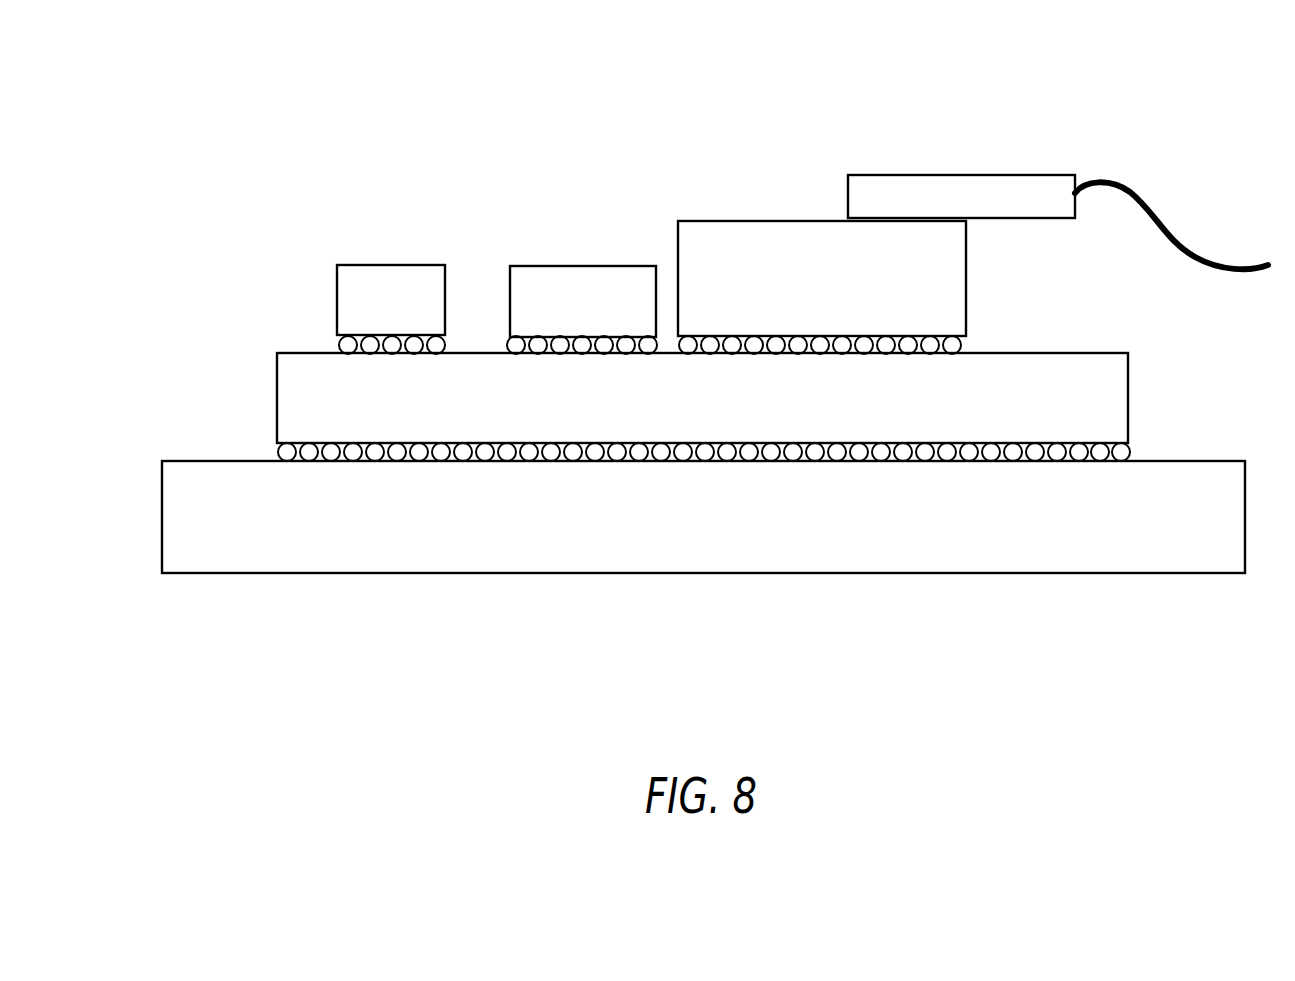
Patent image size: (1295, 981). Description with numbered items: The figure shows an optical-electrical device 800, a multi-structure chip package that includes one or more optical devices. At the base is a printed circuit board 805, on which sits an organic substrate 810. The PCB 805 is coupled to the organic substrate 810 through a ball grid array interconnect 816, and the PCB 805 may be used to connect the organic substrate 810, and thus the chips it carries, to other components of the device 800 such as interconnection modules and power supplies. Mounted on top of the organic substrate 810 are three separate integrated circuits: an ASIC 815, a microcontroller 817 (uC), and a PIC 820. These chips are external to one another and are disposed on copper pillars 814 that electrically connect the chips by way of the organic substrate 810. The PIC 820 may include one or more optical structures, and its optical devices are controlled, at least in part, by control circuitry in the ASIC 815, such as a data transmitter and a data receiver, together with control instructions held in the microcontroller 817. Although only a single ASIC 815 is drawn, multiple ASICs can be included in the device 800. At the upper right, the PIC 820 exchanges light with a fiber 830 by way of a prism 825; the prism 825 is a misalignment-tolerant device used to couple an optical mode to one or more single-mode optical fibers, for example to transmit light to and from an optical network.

The optical-electrical device 800 is at (346, 97).
The printed circuit board 805 is at (682, 546).
The organic substrate 810 is at (682, 428).
The copper pillars 814 is at (326, 341).
The ASIC 815 is at (562, 331).
The ball grid array interconnect 816 is at (250, 445).
The microcontroller 817 is at (370, 334).
The PIC 820 is at (801, 308).
The prism 825 is at (940, 209).
The fiber 830 is at (1133, 185).